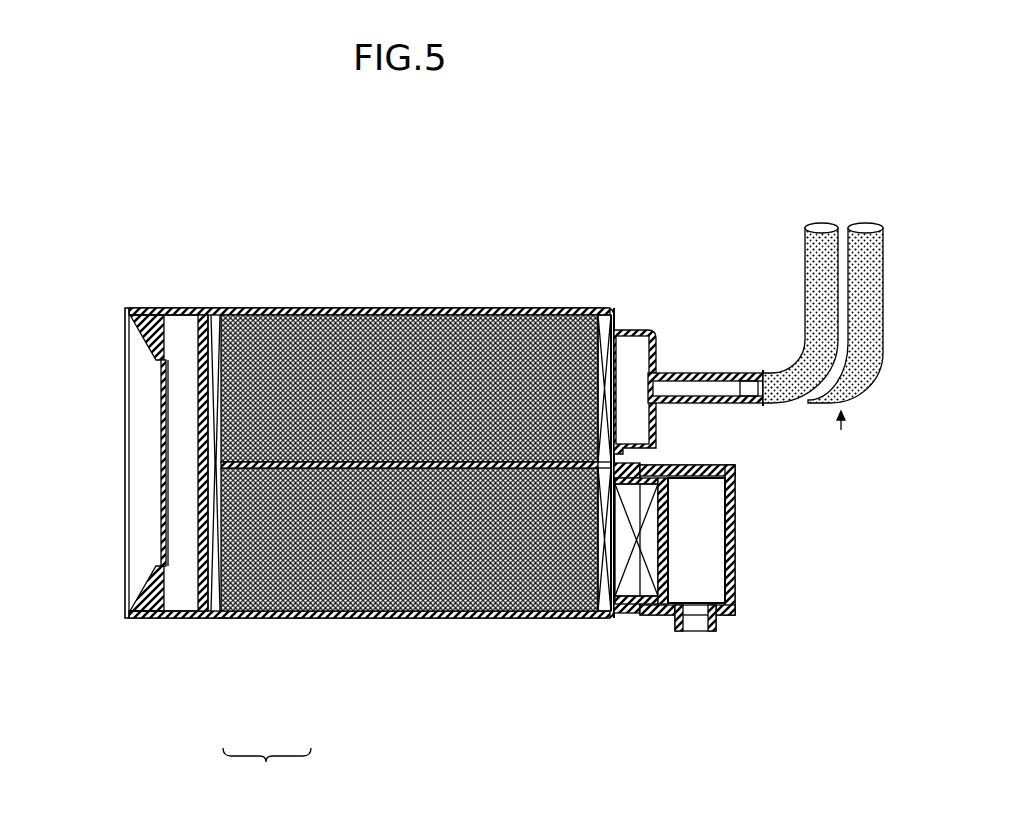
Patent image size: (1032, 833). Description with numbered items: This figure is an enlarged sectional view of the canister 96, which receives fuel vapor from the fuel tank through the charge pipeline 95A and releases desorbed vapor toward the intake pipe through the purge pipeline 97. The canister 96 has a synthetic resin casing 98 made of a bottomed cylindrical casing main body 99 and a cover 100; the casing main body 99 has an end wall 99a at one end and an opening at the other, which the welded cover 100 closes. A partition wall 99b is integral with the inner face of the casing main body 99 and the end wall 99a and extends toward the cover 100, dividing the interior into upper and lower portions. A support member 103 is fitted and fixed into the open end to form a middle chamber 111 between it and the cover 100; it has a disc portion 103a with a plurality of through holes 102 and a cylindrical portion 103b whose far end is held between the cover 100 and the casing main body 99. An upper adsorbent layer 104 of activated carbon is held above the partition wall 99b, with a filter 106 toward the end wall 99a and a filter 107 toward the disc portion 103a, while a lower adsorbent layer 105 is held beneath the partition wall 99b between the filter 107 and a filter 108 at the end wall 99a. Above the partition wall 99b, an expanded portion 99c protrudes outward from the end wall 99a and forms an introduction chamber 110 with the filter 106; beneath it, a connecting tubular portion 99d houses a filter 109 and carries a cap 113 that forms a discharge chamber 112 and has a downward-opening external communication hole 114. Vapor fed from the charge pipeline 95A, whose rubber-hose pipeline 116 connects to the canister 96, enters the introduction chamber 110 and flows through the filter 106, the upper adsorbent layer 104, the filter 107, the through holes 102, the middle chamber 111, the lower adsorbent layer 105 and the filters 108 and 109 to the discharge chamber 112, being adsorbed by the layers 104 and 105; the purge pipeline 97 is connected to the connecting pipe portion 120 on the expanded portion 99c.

The charge pipeline 95A is at (860, 468).
The canister 96 is at (398, 290).
The purge pipeline 97 is at (812, 285).
The casing 98 is at (267, 766).
The casing main body 99 is at (290, 607).
The end wall 99a is at (610, 318).
The partition wall 99b is at (277, 455).
The expanded portion 99c is at (648, 352).
The connecting tubular portion 99d is at (622, 597).
The cover 100 is at (213, 607).
The through holes 102 is at (190, 355).
The support member 103 is at (191, 290).
The disc portion 103a is at (188, 473).
The cylindrical portion 103b is at (146, 607).
The upper adsorbent layer 104 is at (441, 392).
The lower adsorbent layer 105 is at (441, 534).
The filter 106 is at (596, 310).
The filter 107 is at (208, 307).
The filter 108 is at (593, 543).
The filter 109 is at (643, 543).
The introduction chamber 110 is at (632, 350).
The middle chamber 111 is at (167, 338).
The discharge chamber 112 is at (695, 547).
The cap 113 is at (725, 515).
The external communication hole 114 is at (693, 620).
The pipeline 116 is at (863, 343).
The connecting pipe portion 120 is at (697, 393).